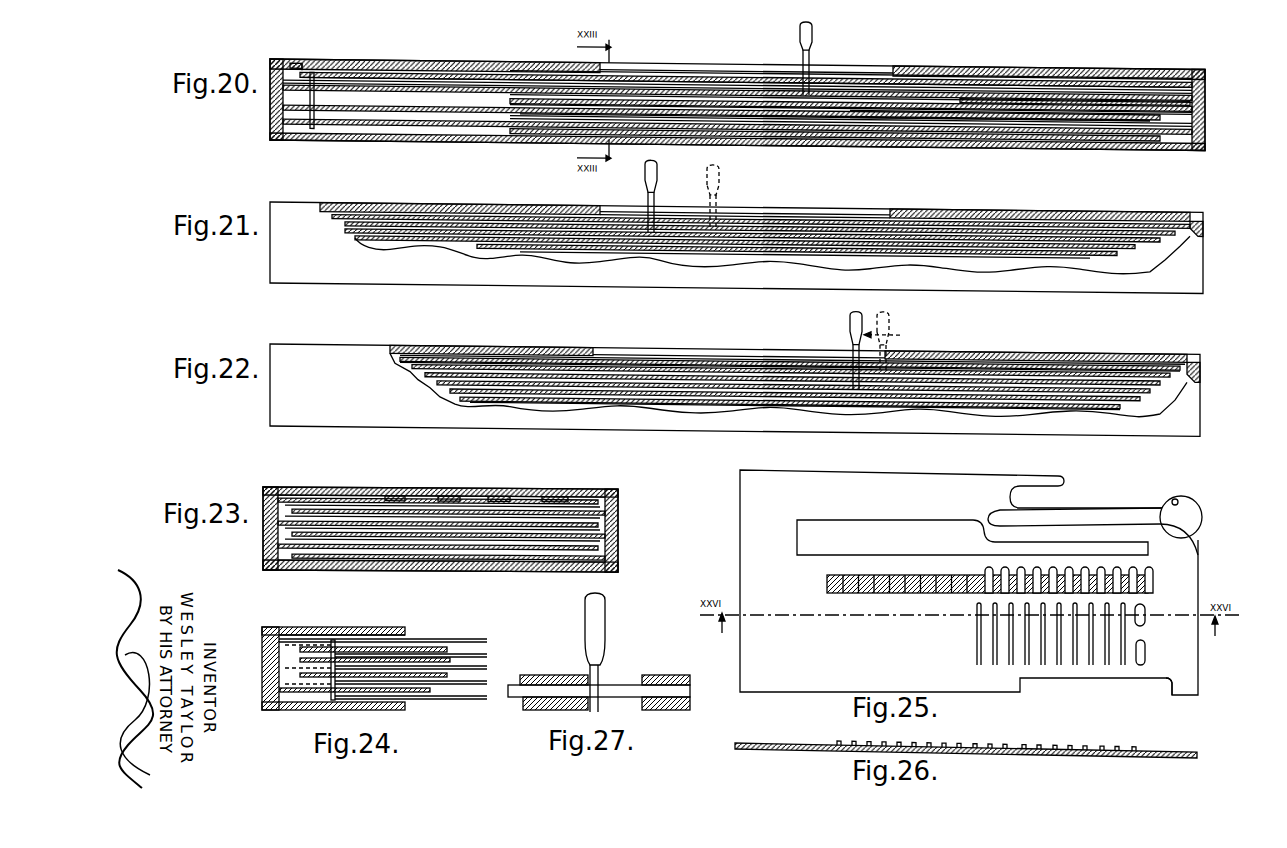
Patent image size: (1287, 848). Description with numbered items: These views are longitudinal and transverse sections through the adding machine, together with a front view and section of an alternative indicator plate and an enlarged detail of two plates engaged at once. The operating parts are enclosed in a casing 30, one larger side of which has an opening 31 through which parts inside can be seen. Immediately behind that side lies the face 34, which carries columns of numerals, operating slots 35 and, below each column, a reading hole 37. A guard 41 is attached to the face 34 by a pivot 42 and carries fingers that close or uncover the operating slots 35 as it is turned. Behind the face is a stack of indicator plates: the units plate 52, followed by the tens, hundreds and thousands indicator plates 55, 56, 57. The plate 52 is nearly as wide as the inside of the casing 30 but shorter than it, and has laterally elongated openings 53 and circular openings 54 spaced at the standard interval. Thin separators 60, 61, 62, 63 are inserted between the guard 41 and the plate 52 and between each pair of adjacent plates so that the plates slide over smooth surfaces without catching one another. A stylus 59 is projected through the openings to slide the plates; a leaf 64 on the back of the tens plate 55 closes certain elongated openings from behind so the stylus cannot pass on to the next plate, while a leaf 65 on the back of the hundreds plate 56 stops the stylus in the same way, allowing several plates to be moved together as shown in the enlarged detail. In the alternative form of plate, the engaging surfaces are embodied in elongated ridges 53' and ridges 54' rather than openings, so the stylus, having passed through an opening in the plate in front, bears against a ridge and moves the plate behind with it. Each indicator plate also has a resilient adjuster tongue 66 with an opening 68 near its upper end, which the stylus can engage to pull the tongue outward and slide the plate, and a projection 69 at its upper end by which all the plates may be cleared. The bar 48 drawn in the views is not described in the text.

In FIG. 20, the casing 30 is at (270, 127).
In FIG. 21, the casing 30 is at (285, 260).
In FIG. 22, the casing 30 is at (277, 407).
In FIG. 23, the casing 30 is at (263, 552).
In FIG. 24, the casing 30 is at (282, 633).
In FIG. 20, the opening 31 is at (880, 61).
In FIG. 21, the opening 31 is at (735, 203).
In FIG. 22, the opening 31 is at (720, 348).
In FIG. 20, the face 34 is at (423, 77).
In FIG. 21, the face 34 is at (503, 209).
In FIG. 23, the face 34 is at (597, 486).
In FIG. 24, the face 34 is at (418, 633).
In FIG. 20, the operating slots 35 is at (736, 111).
In FIG. 21, the operating slots 35 is at (770, 209).
In FIG. 20, the reading holes 37 is at (610, 66).
In FIG. 21, the reading holes 37 is at (600, 208).
In FIG. 22, the reading holes 37 is at (600, 353).
In FIG. 23, the reading holes 37 is at (522, 491).
In FIG. 20, the guard 41 is at (395, 73).
In FIG. 21, the guard 41 is at (797, 214).
In FIG. 22, the guard 41 is at (773, 359).
In FIG. 24, the guard 41 is at (460, 642).
In FIG. 20, the pivot 42 is at (300, 66).
In FIG. 20, the bar 48 is at (310, 98).
In FIG. 24, the bar 48 is at (317, 703).
In FIG. 20, the plate 52 is at (508, 100).
In FIG. 21, the plate 52 is at (862, 225).
In FIG. 22, the plate 52 is at (507, 367).
In FIG. 23, the plate 52 is at (618, 505).
In FIG. 24, the plate 52 is at (450, 687).
In FIG. 20, the elongated openings 53 is at (1075, 66).
In FIG. 22, the elongated openings 53 is at (791, 345).
In FIG. 27, the elongated openings 53 is at (599, 678).
In FIG. 25, the elongated openings 53 is at (1156, 616).
In FIG. 26, the elongated openings 53 is at (966, 735).
In FIG. 25, the elongated ridges 53' is at (1025, 616).
In FIG. 26, the elongated ridges 53' is at (1053, 725).
In FIG. 25, the circular openings 54 is at (969, 610).
In FIG. 26, the ridges 54' is at (874, 725).
In FIG. 20, the indicator plate 55 is at (1208, 68).
In FIG. 21, the indicator plate 55 is at (1163, 238).
In FIG. 23, the indicator plate 55 is at (620, 520).
In FIG. 24, the indicator plate 55 is at (458, 668).
In FIG. 20, the indicator plate 56 is at (505, 122).
In FIG. 23, the indicator plate 56 is at (620, 540).
In FIG. 24, the indicator plate 56 is at (467, 682).
In FIG. 20, the indicator plate 57 is at (509, 100).
In FIG. 23, the indicator plate 57 is at (620, 566).
In FIG. 24, the indicator plate 57 is at (483, 700).
In FIG. 20, the stylus 59 is at (815, 29).
In FIG. 21, the stylus 59 is at (652, 171).
In FIG. 22, the stylus 59 is at (877, 311).
In FIG. 27, the stylus 59 is at (595, 633).
In FIG. 20, the separator 60 is at (333, 77).
In FIG. 22, the separator 60 is at (520, 359).
In FIG. 23, the separator 60 is at (620, 493).
In FIG. 24, the separator 60 is at (273, 630).
In FIG. 20, the separator 61 is at (440, 92).
In FIG. 22, the separator 61 is at (553, 347).
In FIG. 23, the separator 61 is at (620, 511).
In FIG. 24, the separator 61 is at (277, 640).
In FIG. 20, the separator 62 is at (370, 108).
In FIG. 21, the separator 62 is at (1132, 252).
In FIG. 22, the separator 62 is at (777, 391).
In FIG. 23, the separator 62 is at (622, 531).
In FIG. 24, the separator 62 is at (277, 653).
In FIG. 20, the separator 63 is at (452, 120).
In FIG. 22, the separator 63 is at (815, 402).
In FIG. 23, the separator 63 is at (618, 553).
In FIG. 24, the separator 63 is at (280, 673).
In FIG. 20, the leaf 64 is at (1080, 98).
In FIG. 21, the leaf 64 is at (507, 238).
In FIG. 22, the leaf 64 is at (553, 384).
In FIG. 23, the leaf 64 is at (537, 528).
In FIG. 20, the leaf 65 is at (1068, 104).
In FIG. 21, the leaf 65 is at (1077, 244).
In FIG. 22, the leaf 65 is at (570, 397).
In FIG. 23, the leaf 65 is at (622, 546).
In FIG. 25, the adjuster tongue 66 is at (1187, 517).
In FIG. 25, the opening 68 is at (1177, 500).
In FIG. 25, the projection 69 is at (1170, 690).